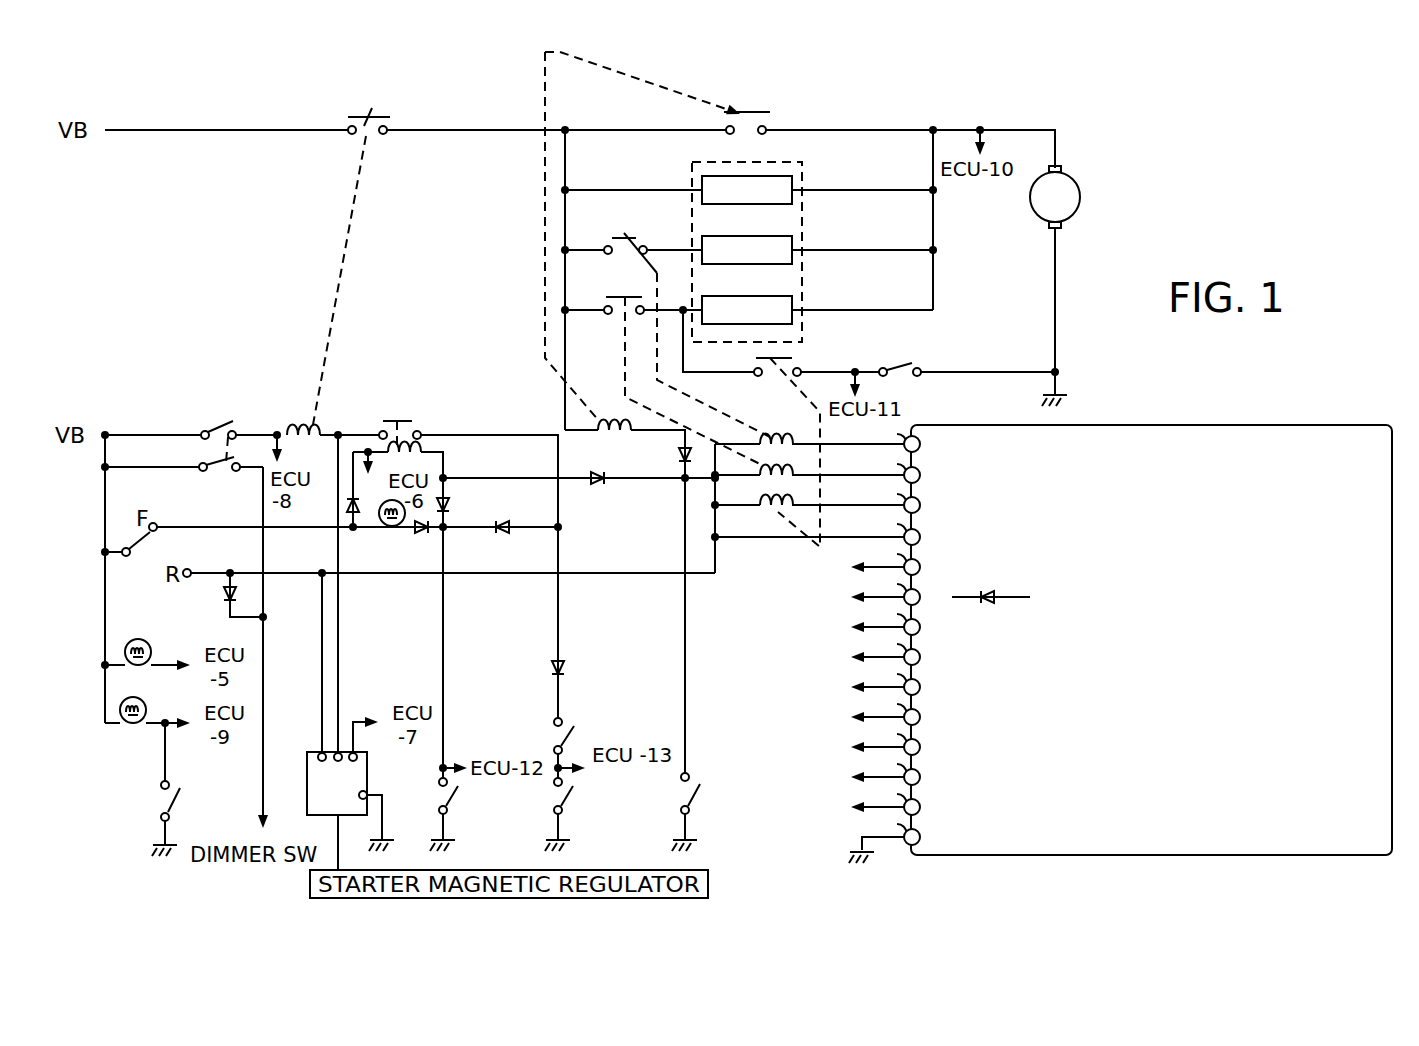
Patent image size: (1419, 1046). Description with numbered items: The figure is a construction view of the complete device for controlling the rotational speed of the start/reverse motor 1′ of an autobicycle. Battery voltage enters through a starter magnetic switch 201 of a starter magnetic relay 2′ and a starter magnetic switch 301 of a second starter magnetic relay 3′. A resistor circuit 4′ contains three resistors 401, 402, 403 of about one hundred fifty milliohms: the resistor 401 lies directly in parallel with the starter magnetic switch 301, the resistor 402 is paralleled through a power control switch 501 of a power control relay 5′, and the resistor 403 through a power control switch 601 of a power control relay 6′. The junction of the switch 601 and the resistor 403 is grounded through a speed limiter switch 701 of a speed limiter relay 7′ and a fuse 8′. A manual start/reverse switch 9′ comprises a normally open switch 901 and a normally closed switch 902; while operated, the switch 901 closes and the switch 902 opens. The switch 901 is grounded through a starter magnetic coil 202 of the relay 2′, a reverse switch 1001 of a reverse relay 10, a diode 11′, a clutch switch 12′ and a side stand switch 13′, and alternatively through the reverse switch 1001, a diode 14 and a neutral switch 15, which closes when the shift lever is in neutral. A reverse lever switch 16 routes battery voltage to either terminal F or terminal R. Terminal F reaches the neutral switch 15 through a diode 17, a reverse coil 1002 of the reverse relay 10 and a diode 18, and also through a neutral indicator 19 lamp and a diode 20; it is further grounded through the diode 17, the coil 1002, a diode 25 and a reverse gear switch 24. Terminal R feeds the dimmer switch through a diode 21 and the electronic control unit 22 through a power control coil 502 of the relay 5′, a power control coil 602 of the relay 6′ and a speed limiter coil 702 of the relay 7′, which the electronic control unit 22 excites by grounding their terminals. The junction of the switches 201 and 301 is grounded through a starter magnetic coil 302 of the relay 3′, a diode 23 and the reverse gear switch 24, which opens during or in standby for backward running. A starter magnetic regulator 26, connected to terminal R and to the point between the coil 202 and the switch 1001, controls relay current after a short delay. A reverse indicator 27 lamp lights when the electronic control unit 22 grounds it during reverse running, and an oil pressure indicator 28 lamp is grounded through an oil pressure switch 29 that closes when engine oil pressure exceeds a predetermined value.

The starter magnetic switch 201 is at (374, 108).
The starter magnetic switch 301 is at (750, 112).
The starter magnetic relay 2′ is at (352, 263).
The starter magnetic relay 3′ is at (540, 208).
The resistor circuit 4′ is at (802, 168).
The resistor 401 is at (792, 200).
The resistor 402 is at (792, 258).
The resistor 403 is at (792, 318).
The power control switch 501 is at (622, 236).
The power control relay 5′ is at (704, 400).
The power control switch 601 is at (622, 296).
The power control relay 6′ is at (620, 350).
The speed limiter switch 701 is at (788, 353).
The speed limiter relay 7′ is at (822, 470).
The fuse 8′ is at (900, 366).
The start/reverse motor 1′ is at (1079, 188).
The electronic control unit 22 is at (1282, 425).
The power control coil 502 is at (782, 428).
The power control coil 602 is at (766, 482).
The speed limiter coil 702 is at (778, 512).
The starter magnetic coil 302 is at (632, 440).
The diode 23 is at (683, 440).
The diode 25 is at (598, 486).
The switch 901 is at (226, 424).
The start/reverse switch 9′ is at (200, 448).
The switch 902 is at (184, 485).
The starter magnetic coil 202 is at (300, 425).
The reverse switch 1001 is at (392, 418).
The reverse relay 10 is at (408, 427).
The reverse coil 1002 is at (425, 446).
The diode 17 is at (346, 510).
The neutral indicator 19 is at (382, 524).
The diode 20 is at (422, 530).
The diode 14 is at (499, 531).
The diode 18 is at (452, 506).
The reverse lever switch 16 is at (143, 549).
The diode 21 is at (226, 592).
The reverse indicator 27 is at (142, 640).
The oil pressure indicator 28 is at (133, 724).
The oil pressure switch 29 is at (180, 800).
The starter magnetic regulator 26 is at (306, 766).
The neutral switch 15 is at (456, 800).
The diode 11′ is at (565, 668).
The clutch switch 12′ is at (572, 732).
The side stand switch 13′ is at (572, 800).
The reverse gear switch 24 is at (700, 786).